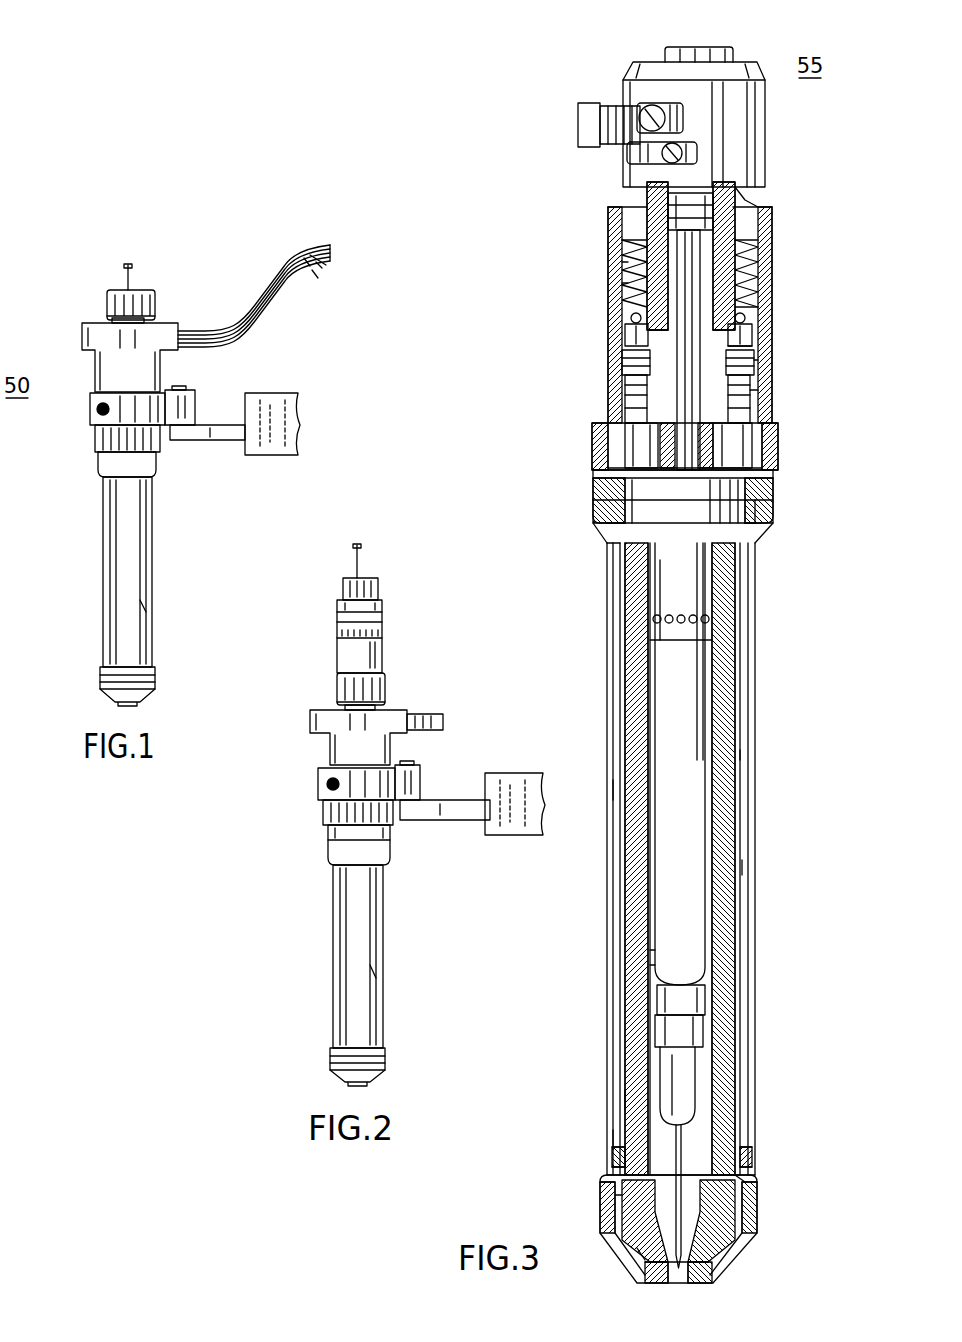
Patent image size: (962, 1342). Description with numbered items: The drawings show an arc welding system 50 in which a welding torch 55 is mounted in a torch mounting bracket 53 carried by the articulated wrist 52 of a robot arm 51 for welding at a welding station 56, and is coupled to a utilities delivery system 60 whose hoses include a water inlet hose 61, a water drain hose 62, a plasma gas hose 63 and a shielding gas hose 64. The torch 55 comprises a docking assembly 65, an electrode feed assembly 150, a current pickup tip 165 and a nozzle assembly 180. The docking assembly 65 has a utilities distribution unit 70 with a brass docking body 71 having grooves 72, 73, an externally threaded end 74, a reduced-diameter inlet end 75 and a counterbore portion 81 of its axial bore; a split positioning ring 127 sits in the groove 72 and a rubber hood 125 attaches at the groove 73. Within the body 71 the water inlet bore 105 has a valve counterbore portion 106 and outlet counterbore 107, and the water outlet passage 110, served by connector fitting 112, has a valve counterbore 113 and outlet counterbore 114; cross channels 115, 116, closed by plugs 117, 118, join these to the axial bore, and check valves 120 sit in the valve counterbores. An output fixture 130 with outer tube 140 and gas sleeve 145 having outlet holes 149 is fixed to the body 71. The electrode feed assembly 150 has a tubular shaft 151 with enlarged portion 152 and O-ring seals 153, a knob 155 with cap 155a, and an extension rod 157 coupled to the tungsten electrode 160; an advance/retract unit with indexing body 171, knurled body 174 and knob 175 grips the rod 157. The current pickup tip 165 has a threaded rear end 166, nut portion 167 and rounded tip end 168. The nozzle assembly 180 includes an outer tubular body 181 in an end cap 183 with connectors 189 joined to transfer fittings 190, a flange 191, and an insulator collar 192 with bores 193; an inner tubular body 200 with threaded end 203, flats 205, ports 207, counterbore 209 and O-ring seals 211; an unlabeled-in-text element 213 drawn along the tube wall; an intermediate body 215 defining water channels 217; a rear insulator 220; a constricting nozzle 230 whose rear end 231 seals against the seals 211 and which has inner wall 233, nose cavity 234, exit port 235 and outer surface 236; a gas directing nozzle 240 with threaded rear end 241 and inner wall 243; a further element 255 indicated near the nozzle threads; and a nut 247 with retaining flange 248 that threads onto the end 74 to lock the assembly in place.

In FIG. 2, the arc welding system 50 is at (402, 858).
In FIG. 1, the robot arm 51 is at (285, 396).
In FIG. 2, the robot arm 51 is at (505, 773).
In FIG. 1, the articulated wrist 52 is at (215, 440).
In FIG. 2, the articulated wrist 52 is at (455, 822).
In FIG. 1, the torch mounting bracket 53 is at (190, 405).
In FIG. 2, the torch mounting bracket 53 is at (410, 778).
In FIG. 1, the welding torch 55 is at (94, 488).
In FIG. 2, the welding torch 55 is at (292, 722).
In FIG. 1, the welding station 56 is at (206, 328).
In FIG. 1, the utilities delivery system 60 is at (302, 318).
In FIG. 1, the water inlet hose 61 is at (312, 280).
In FIG. 1, the water drain hose 62 is at (320, 268).
In FIG. 1, the plasma gas hose 63 is at (305, 262).
In FIG. 1, the shielding gas hose 64 is at (320, 260).
In FIG. 1, the docking assembly 65 is at (170, 380).
In FIG. 3, the docking assembly 65 is at (606, 393).
In FIG. 3, the utilities distribution unit 70 is at (786, 262).
In FIG. 1, the docking body 71 is at (92, 422).
In FIG. 2, the docking body 71 is at (325, 805).
In FIG. 3, the docking body 71 is at (622, 323).
In FIG. 3, the circumferential groove 72 is at (612, 283).
In FIG. 3, the circumferential groove 73 is at (610, 265).
In FIG. 3, the externally threaded end 74 is at (598, 438).
In FIG. 3, the reduced-diameter inlet end 75 is at (765, 130).
In FIG. 3, the counterbore portion 81 is at (647, 207).
In FIG. 3, the elongated bore 105 is at (745, 200).
In FIG. 3, the valve counterbore portion 106 is at (752, 300).
In FIG. 3, the outlet end counterbore portion 107 is at (755, 393).
In FIG. 3, the water outlet passage 110 is at (630, 186).
In FIG. 3, the connector fitting 112 is at (578, 112).
In FIG. 3, the valve counterbore portion 113 is at (630, 318).
In FIG. 3, the outlet end counterbore portion 114 is at (622, 400).
In FIG. 3, the cross channel 115 is at (622, 372).
In FIG. 3, the cross channel 116 is at (755, 365).
In FIG. 3, the plug 117 is at (625, 345).
In FIG. 3, the plug 118 is at (752, 343).
In FIG. 3, the check valve 120 is at (618, 247).
In FIG. 1, the hood 125 is at (100, 368).
In FIG. 2, the hood 125 is at (405, 713).
In FIG. 2, the split positioning ring 127 is at (320, 770).
In FIG. 3, the output fixture 130 is at (723, 690).
In FIG. 3, the outer tube 140 is at (735, 755).
In FIG. 3, the gas sleeve 145 is at (748, 565).
In FIG. 3, the outlet holes 149 is at (704, 613).
In FIG. 1, the electrode feed assembly 150 is at (172, 305).
In FIG. 3, the tubular shaft 151 is at (745, 243).
In FIG. 3, the enlarged-diameter portion 152 is at (620, 222).
In FIG. 3, the O-ring seals 153 is at (712, 210).
In FIG. 1, the knob 155 is at (110, 303).
In FIG. 2, the knob 155 is at (385, 686).
In FIG. 3, the knob 155 is at (733, 50).
In FIG. 1, the cap 155a is at (145, 290).
In FIG. 1, the extension rod 157 is at (128, 268).
In FIG. 2, the extension rod 157 is at (360, 575).
In FIG. 3, the electrode 160 is at (684, 1248).
In FIG. 3, the current pickup tip 165 is at (656, 1066).
In FIG. 3, the externally threaded rear end 166 is at (705, 995).
In FIG. 3, the nut portion 167 is at (705, 1030).
In FIG. 3, the rounded forward tip end 168 is at (690, 1075).
In FIG. 2, the indexing body 171 is at (338, 650).
In FIG. 2, the knurled body 174 is at (338, 615).
In FIG. 2, the rotatable knob 175 is at (380, 586).
In FIG. 1, the nozzle assembly 180 is at (101, 610).
In FIG. 2, the nozzle assembly 180 is at (334, 925).
In FIG. 3, the nozzle assembly 180 is at (758, 828).
In FIG. 1, the outer tubular body 181 is at (150, 610).
In FIG. 2, the outer tubular body 181 is at (375, 975).
In FIG. 3, the outer tubular body 181 is at (607, 790).
In FIG. 3, the end cap 183 is at (765, 505).
In FIG. 3, the threaded connectors 189 is at (605, 480).
In FIG. 3, the transfer fittings 190 is at (600, 456).
In FIG. 3, the cylindrical flange 191 is at (605, 545).
In FIG. 3, the insulator collar 192 is at (762, 485).
In FIG. 3, the bores 193 is at (618, 498).
In FIG. 3, the inner tubular body 200 is at (740, 785).
In FIG. 3, the externally threaded distal end portion 203 is at (745, 1208).
In FIG. 3, the flats 205 is at (624, 712).
In FIG. 3, the ports 207 is at (620, 1140).
In FIG. 3, the counterbore 209 is at (623, 1213).
In FIG. 3, the O-ring seals 211 is at (617, 1160).
In FIG. 3, the heater 213 is at (730, 863).
In FIG. 3, the intermediate tubular body 215 is at (614, 745).
In FIG. 3, the water channels 217 is at (626, 967).
In FIG. 3, the rear insulator 220 is at (641, 683).
In FIG. 3, the constricting nozzle 230 is at (640, 1268).
In FIG. 3, the rear end 231 is at (628, 1098).
In FIG. 3, the inner wall 233 is at (620, 1183).
In FIG. 3, the nose cavity 234 is at (662, 1276).
In FIG. 3, the exit port 235 is at (690, 1282).
In FIG. 3, the frustoconical outer surface 236 is at (740, 1248).
In FIG. 3, the gas directing nozzle 240 is at (763, 1232).
In FIG. 3, the internally threaded rear end 241 is at (757, 1190).
In FIG. 3, the frustoconical inner wall 243 is at (640, 1255).
In FIG. 1, the nut 247 is at (100, 470).
In FIG. 2, the nut 247 is at (330, 845).
In FIG. 3, the nut 247 is at (778, 445).
In FIG. 3, the retaining flange 248 is at (765, 528).
In FIG. 3, the thread 255 is at (742, 1180).